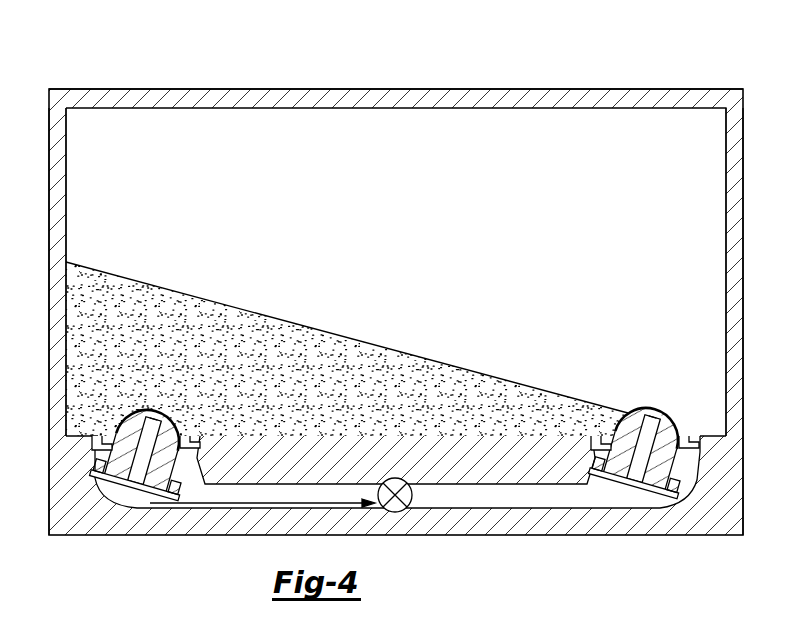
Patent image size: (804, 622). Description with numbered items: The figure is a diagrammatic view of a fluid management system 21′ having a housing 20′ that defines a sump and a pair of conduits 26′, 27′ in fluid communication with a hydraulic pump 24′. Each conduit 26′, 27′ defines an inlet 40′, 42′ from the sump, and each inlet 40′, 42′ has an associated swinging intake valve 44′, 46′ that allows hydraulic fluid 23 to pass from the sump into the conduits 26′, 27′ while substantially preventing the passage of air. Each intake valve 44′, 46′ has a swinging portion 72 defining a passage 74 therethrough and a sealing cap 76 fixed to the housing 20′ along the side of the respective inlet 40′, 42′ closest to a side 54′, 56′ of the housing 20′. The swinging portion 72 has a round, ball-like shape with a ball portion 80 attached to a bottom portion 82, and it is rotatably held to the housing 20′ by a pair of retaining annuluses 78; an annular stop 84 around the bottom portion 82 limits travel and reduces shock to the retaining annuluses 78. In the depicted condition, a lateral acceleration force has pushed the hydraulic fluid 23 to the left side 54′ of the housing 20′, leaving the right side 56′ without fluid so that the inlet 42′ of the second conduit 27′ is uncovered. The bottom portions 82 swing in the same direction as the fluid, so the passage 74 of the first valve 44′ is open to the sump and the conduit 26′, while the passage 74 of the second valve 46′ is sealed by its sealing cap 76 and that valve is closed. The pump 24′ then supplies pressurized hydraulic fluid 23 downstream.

The housing 20′ is at (401, 298).
The fluid management system 21′ is at (654, 63).
The hydraulic fluid 23 is at (352, 352).
The hydraulic pump 24′ is at (405, 510).
The conduit 26′ is at (315, 484).
The conduit 27′ is at (490, 484).
The inlet 40′ is at (200, 448).
The inlet 42′ is at (592, 438).
The intake valve 44′ is at (158, 410).
The intake valve 46′ is at (658, 405).
The left side 54′ is at (49, 230).
The right side 56′ is at (744, 228).
The swinging portion 72 is at (127, 421).
The passage 74 is at (148, 427).
The sealing cap 76 is at (130, 411).
The retaining annuluses 78 is at (99, 441).
The ball portion 80 is at (170, 430).
The bottom portion 82 is at (126, 492).
The annular stop 84 is at (97, 466).